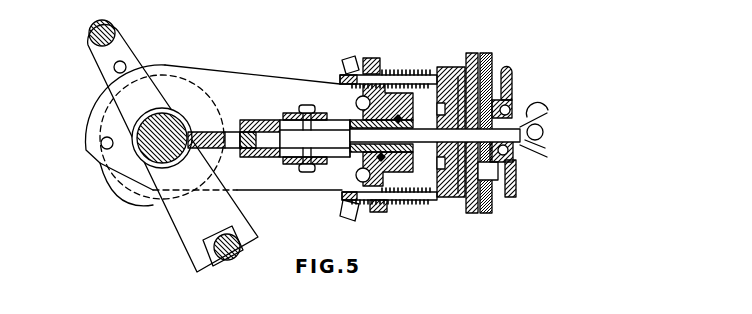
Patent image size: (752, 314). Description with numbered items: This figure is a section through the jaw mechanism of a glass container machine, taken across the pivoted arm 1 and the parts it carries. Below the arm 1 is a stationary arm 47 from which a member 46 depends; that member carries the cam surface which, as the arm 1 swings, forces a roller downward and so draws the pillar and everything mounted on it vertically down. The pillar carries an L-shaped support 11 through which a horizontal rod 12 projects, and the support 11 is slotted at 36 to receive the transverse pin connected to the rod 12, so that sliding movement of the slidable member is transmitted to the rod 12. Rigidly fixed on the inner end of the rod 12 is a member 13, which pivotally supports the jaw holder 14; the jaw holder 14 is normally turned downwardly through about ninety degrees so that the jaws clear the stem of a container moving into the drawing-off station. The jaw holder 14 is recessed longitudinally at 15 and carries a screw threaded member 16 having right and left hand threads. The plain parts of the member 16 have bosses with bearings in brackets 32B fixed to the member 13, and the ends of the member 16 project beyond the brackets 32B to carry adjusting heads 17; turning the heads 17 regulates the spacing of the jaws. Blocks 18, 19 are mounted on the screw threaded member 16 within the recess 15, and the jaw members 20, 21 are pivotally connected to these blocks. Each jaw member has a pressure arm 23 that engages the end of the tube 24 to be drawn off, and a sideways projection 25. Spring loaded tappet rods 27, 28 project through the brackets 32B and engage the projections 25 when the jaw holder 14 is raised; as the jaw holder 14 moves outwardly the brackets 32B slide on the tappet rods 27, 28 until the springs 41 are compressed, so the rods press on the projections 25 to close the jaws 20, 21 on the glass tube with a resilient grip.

The arm 1 is at (178, 128).
The L-shaped support 11 is at (263, 120).
The horizontal rod 12 is at (330, 138).
The member 13 is at (453, 68).
The jaw holder 14 is at (465, 100).
The recess 15 is at (497, 163).
The screw threaded member 16 is at (512, 153).
The adjusting heads 17 is at (472, 55).
The block 18 is at (492, 100).
The block 19 is at (512, 108).
The jaw member 20 is at (545, 117).
The jaw member 21 is at (543, 150).
The pressure arm 23 is at (543, 133).
The tube 24 is at (538, 148).
The sideways projection 25 is at (512, 72).
The tappet rod 27 is at (402, 72).
The tappet rod 28 is at (423, 198).
The bracket 32B is at (457, 65).
The slot 36 is at (340, 153).
The spring 41 is at (393, 70).
The member 46 is at (97, 60).
The stationary arm 47 is at (178, 217).